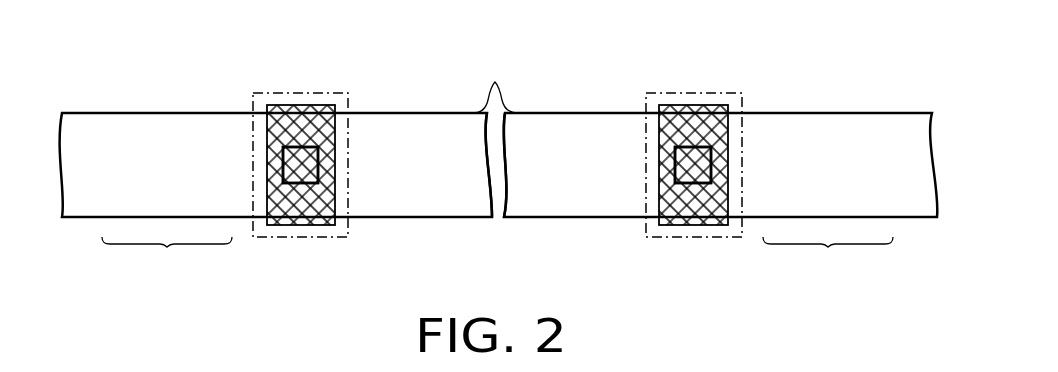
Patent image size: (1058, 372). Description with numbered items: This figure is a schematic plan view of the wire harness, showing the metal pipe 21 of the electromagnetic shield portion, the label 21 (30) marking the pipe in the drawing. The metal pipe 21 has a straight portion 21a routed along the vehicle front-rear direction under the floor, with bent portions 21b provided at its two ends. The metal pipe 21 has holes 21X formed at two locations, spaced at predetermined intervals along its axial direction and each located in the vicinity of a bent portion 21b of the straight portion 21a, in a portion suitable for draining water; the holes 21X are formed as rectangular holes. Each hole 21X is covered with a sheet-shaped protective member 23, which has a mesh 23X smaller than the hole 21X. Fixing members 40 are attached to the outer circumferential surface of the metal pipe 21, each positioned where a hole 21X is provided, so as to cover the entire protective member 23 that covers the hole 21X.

The metal pipe 21 is at (502, 139).
The wiring structure 30 is at (882, 113).
The straight portion 21a is at (495, 131).
The bent portion 21b is at (497, 258).
The hole 21X is at (300, 183).
The protective member 23 is at (335, 137).
The mesh 23X is at (313, 162).
The fixing member 40 is at (302, 93).